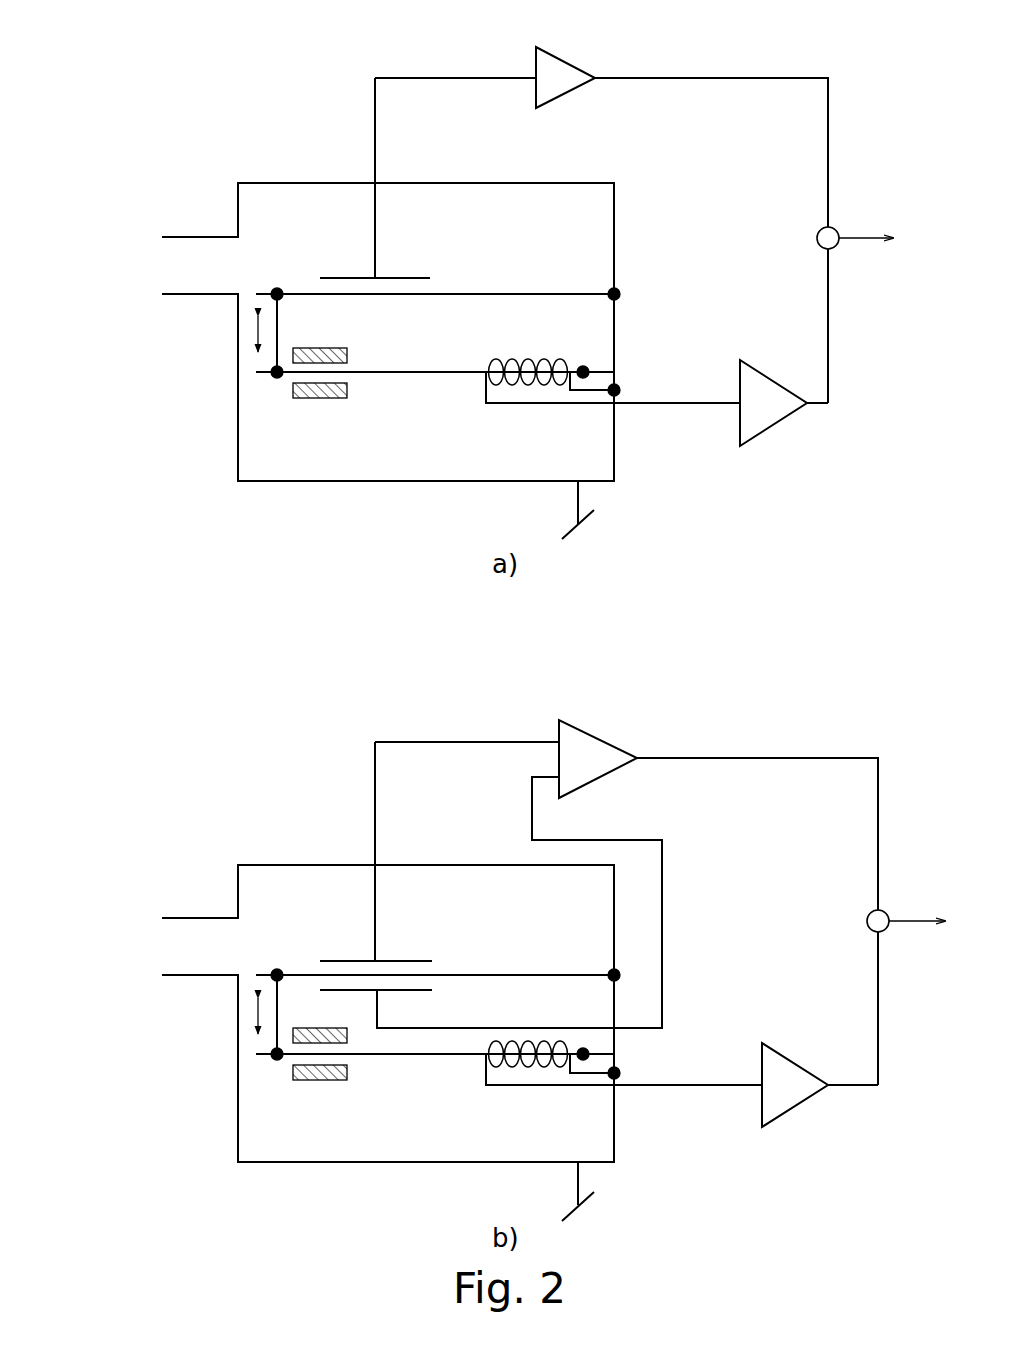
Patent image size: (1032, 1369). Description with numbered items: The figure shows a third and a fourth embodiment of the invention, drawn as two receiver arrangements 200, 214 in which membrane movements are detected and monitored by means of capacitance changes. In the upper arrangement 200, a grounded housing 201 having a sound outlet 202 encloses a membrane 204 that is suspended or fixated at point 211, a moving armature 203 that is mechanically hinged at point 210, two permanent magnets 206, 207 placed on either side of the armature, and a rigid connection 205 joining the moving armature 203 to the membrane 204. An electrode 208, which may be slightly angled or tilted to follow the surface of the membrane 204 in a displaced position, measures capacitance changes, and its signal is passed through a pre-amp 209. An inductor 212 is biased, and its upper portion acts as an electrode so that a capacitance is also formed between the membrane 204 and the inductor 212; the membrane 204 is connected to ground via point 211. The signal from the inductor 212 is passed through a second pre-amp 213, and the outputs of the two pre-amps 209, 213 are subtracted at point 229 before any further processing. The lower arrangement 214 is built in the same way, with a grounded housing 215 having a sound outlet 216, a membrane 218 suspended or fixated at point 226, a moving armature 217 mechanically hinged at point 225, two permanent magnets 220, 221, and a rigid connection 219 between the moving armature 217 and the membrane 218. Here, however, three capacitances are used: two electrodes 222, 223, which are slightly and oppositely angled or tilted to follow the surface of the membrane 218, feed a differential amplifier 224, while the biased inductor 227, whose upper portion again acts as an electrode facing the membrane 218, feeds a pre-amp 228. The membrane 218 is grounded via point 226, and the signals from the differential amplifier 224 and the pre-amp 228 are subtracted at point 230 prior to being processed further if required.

The ion trap mass spectrometer arrangement 200 is at (252, 89).
The grounded housing 201 is at (618, 432).
The sound outlet 202 is at (173, 260).
The moving armature 203 is at (465, 376).
The membrane 204 is at (513, 290).
The rigid connection 205 is at (277, 362).
The permanent magnet 206 is at (340, 390).
The permanent magnet 207 is at (347, 355).
The electrode 208 is at (402, 266).
The pre-amp 209 is at (558, 72).
The hinge point 210 is at (586, 372).
The suspension point 211 is at (616, 293).
The inductor 212 is at (520, 356).
The pre-amp 213 is at (770, 410).
The ion trap mass spectrometer arrangement 214 is at (227, 832).
The grounded housing 215 is at (618, 1115).
The sound outlet 216 is at (178, 942).
The moving armature 217 is at (443, 1060).
The membrane 218 is at (523, 960).
The rigid connection 219 is at (277, 1044).
The permanent magnet 220 is at (330, 1076).
The permanent magnet 221 is at (347, 1034).
The electrode 222 is at (343, 959).
The electrode 223 is at (420, 990).
The differential amplifier 224 is at (584, 750).
The hinge point 225 is at (586, 1054).
The suspension point 226 is at (617, 975).
The inductor 227 is at (547, 1041).
The pre-amp 228 is at (790, 1095).
The subtraction point 229 is at (818, 232).
The subtraction point 230 is at (868, 912).